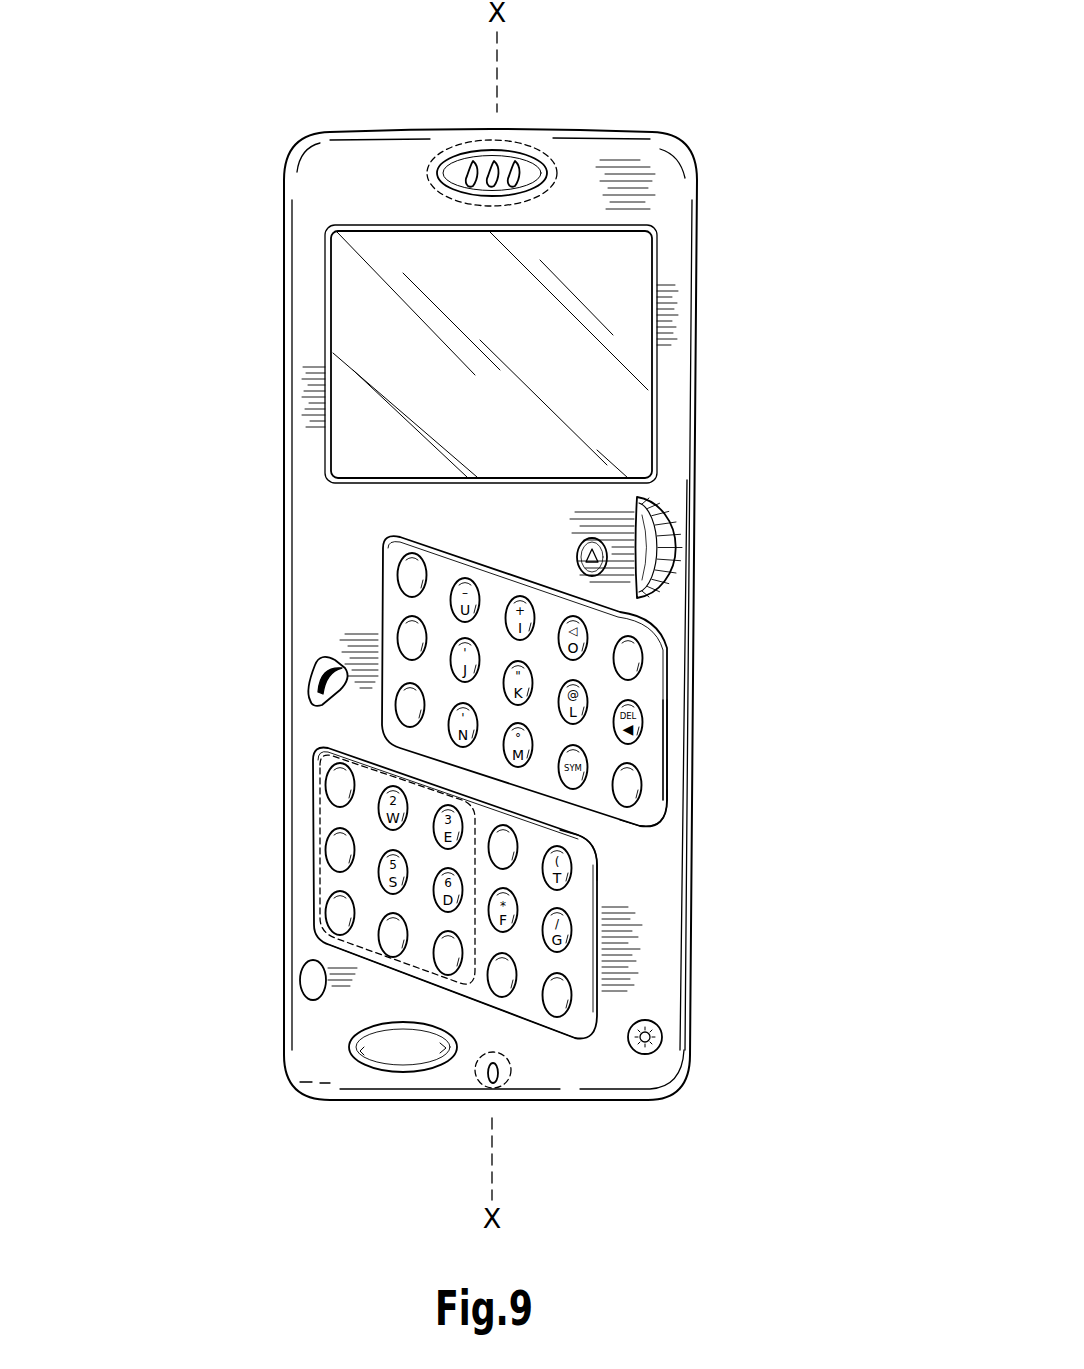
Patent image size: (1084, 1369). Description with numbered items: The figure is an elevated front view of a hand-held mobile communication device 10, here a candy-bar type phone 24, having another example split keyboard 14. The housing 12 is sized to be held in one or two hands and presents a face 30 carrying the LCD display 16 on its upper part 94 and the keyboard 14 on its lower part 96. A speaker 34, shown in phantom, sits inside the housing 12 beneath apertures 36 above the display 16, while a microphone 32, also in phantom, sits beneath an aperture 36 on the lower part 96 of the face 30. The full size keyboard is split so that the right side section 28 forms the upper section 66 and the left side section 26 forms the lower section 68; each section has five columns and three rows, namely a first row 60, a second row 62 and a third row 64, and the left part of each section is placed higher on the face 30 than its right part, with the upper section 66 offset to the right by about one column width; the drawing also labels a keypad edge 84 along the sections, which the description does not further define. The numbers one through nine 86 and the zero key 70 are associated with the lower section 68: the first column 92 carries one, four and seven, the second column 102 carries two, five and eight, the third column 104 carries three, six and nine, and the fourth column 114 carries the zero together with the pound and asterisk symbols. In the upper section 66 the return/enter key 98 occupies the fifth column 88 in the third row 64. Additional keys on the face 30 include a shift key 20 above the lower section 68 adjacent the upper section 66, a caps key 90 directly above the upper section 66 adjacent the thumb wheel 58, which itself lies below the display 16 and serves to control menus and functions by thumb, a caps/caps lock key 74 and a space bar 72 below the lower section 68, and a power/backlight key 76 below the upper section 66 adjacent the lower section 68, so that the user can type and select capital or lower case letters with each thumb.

The mobile communication device 10 is at (793, 105).
The housing 12 is at (705, 717).
The keyboard 14 is at (610, 877).
The display 16 is at (630, 372).
The shift key 20 is at (310, 680).
The candy-bar type phone 24 is at (722, 220).
The left side section 26 is at (583, 945).
The right side section 28 is at (645, 592).
The face of the housing 30 is at (317, 593).
The microphone 32 is at (493, 1092).
The speaker 34 is at (537, 145).
The apertures 36 is at (472, 170).
The thumb wheel 58 is at (668, 540).
The first row 60 is at (397, 575).
The second row 62 is at (398, 637).
The third row 64 is at (398, 700).
The upper section 66 is at (685, 638).
The lower section 68 is at (605, 845).
The number 0 key 70 is at (511, 992).
The space bar 72 is at (357, 1057).
The caps/caps lock key 74 is at (300, 1000).
The power/backlight key 76 is at (662, 1035).
The keypad panel edge 84 is at (670, 685).
The numbers 1-9 86 is at (310, 815).
The fifth column 88 is at (620, 632).
The caps key 90 is at (600, 543).
The first column 92 is at (408, 553).
The upper part of the face 94 is at (312, 336).
The lower part of the face 96 is at (688, 779).
The return/enter key 98 is at (640, 780).
The second column 102 is at (407, 983).
The third column 104 is at (445, 980).
The fourth column 114 is at (510, 845).